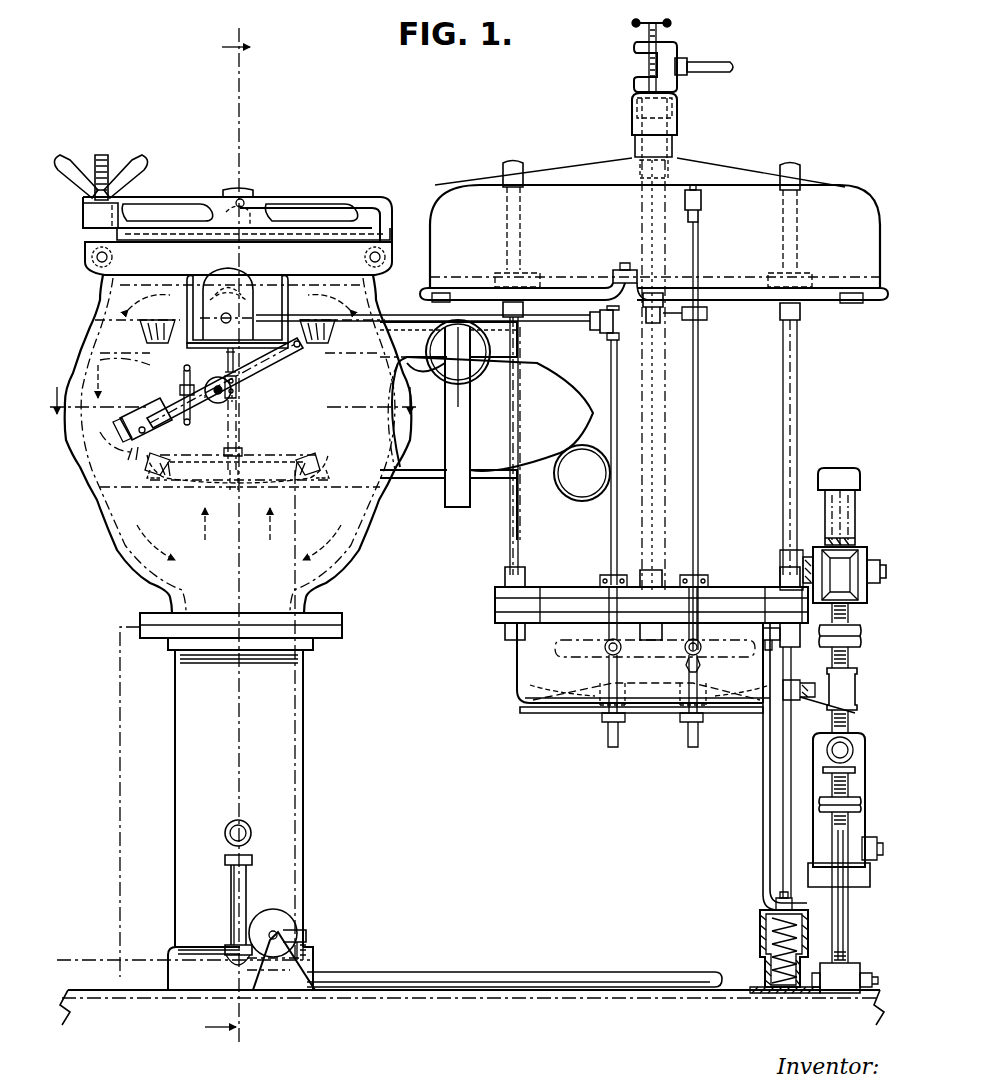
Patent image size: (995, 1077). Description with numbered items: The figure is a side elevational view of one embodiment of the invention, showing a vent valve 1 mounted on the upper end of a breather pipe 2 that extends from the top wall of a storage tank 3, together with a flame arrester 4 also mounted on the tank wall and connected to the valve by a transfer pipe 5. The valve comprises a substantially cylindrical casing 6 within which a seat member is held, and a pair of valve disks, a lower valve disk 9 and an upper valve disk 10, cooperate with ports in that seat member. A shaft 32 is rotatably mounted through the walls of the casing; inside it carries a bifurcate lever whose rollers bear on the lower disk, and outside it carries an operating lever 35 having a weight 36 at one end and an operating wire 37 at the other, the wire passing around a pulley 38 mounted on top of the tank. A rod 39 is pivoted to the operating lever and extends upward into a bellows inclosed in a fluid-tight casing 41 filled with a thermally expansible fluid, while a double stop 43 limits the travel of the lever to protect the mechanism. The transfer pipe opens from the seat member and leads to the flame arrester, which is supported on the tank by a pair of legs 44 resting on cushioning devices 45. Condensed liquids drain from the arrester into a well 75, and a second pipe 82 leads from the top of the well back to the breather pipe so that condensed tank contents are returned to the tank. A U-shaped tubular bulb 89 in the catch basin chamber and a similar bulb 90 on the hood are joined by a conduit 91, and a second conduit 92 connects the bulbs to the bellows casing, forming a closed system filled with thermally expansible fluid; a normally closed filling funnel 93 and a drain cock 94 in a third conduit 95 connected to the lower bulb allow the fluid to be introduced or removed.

The vent valve 1 is at (103, 550).
The breather pipe 2 is at (160, 785).
The storage tank 3 is at (103, 990).
The flame arrester 4 is at (797, 402).
The transfer pipe 5 is at (493, 465).
The casing 6 is at (80, 350).
The lower valve disk 9 is at (247, 446).
The upper valve disk 10 is at (224, 312).
The shaft 32 is at (220, 401).
The operating lever 35 is at (208, 399).
The weight 36 is at (217, 401).
The operating wire 37 is at (297, 778).
The pulley 38 is at (290, 915).
The rod 39 is at (222, 374).
The fluid-tight casing 41 is at (248, 304).
The double stop 43 is at (183, 380).
The legs 44 is at (763, 828).
The cushioning devices 45 is at (760, 932).
The well 75 is at (816, 750).
The second pipe 82 is at (520, 970).
The tubular bulb 89 is at (585, 650).
The bulb 90 is at (560, 290).
The conduit 91 is at (612, 370).
The second conduit 92 is at (565, 321).
The filling funnel 93 is at (700, 182).
The drain cock 94 is at (700, 658).
The third conduit 95 is at (697, 400).